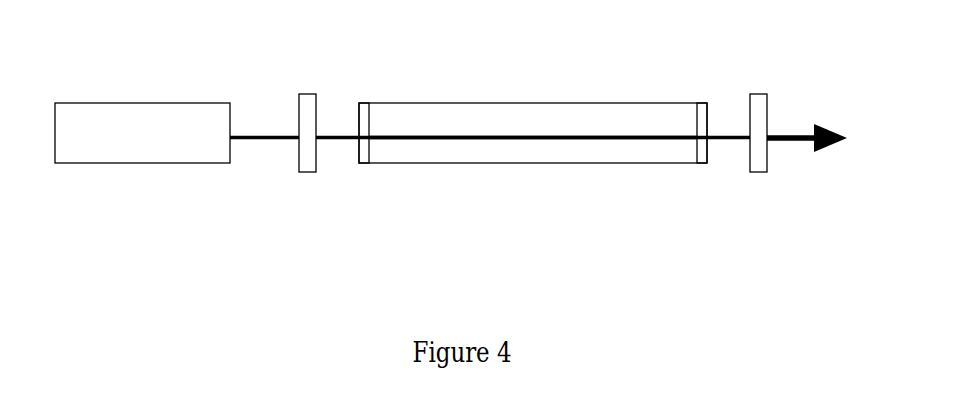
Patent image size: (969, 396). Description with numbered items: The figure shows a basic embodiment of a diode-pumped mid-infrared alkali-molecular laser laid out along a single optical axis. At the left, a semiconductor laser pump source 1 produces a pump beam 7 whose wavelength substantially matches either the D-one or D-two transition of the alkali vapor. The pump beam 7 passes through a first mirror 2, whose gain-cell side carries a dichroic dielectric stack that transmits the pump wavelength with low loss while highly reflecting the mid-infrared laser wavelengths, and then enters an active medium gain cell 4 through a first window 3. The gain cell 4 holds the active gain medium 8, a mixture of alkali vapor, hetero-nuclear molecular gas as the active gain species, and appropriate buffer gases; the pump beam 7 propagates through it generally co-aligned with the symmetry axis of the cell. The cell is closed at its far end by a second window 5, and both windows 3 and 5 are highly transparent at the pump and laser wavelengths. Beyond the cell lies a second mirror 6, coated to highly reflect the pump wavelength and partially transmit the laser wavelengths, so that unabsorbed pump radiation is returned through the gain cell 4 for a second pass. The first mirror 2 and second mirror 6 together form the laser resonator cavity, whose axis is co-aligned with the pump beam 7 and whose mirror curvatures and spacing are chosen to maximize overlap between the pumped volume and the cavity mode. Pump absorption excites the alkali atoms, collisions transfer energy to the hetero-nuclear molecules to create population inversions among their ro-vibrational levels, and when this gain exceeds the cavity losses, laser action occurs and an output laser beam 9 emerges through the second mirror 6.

The semiconductor laser pump source 1 is at (133, 95).
The first mirror 2 is at (308, 181).
The first window 3 is at (360, 95).
The active medium gain cell 4 is at (533, 95).
The second window 5 is at (706, 95).
The second mirror 6 is at (776, 91).
The pump beam 7 is at (254, 126).
The active gain medium 8 is at (577, 156).
The output laser beam 9 is at (818, 138).